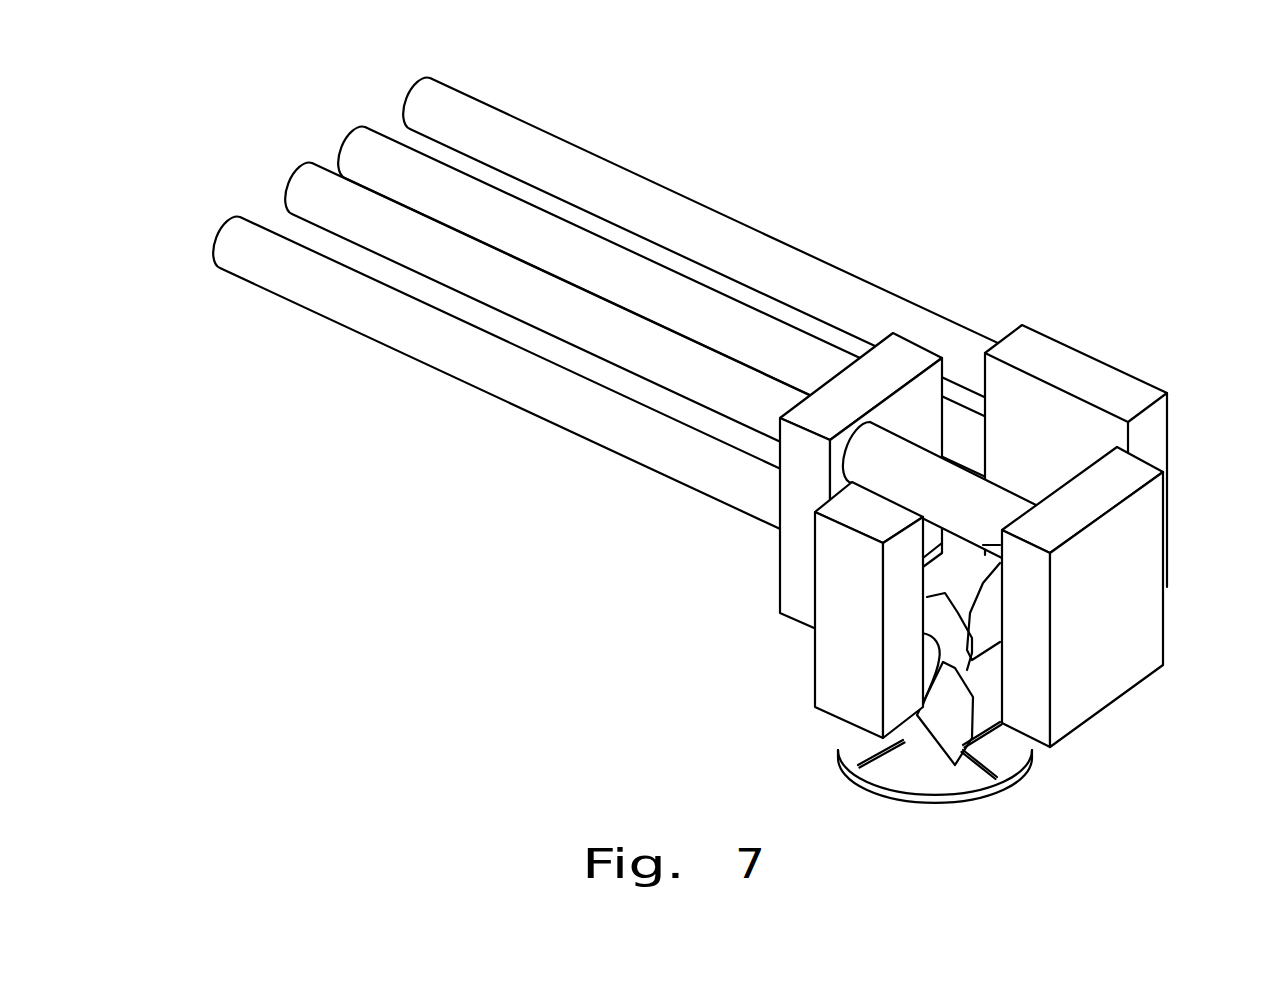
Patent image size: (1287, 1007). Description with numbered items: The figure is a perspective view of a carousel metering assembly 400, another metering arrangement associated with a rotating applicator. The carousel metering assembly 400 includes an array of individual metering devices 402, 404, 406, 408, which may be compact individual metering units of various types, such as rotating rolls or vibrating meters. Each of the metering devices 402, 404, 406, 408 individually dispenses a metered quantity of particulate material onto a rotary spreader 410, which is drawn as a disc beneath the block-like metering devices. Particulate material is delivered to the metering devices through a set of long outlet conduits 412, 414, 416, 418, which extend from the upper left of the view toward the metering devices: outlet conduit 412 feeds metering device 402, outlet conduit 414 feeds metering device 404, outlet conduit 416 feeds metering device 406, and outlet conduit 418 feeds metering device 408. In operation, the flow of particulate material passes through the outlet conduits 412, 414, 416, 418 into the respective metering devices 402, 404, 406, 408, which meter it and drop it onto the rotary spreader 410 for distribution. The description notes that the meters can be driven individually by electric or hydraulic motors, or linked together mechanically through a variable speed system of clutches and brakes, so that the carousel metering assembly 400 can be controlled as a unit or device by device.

The carousel metering assembly 400 is at (1006, 257).
The metering device 402 is at (790, 583).
The metering device 404 is at (825, 680).
The metering device 406 is at (1147, 632).
The metering device 408 is at (1117, 383).
The rotary spreader 410 is at (1030, 747).
The outlet conduit 412 is at (358, 138).
The outlet conduit 414 is at (245, 272).
The outlet conduit 416 is at (303, 183).
The outlet conduit 418 is at (480, 108).